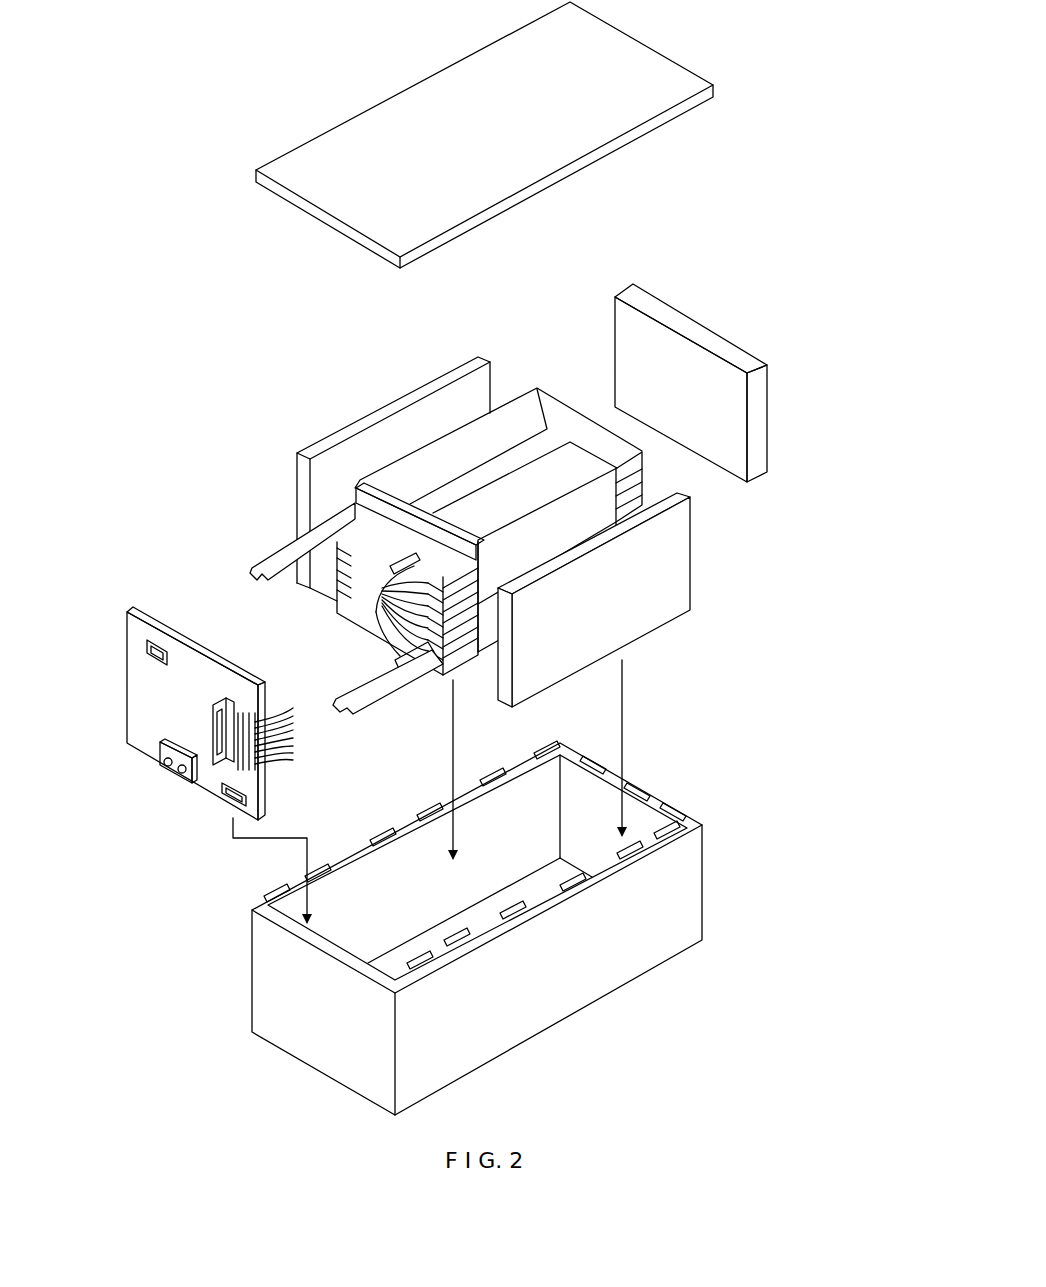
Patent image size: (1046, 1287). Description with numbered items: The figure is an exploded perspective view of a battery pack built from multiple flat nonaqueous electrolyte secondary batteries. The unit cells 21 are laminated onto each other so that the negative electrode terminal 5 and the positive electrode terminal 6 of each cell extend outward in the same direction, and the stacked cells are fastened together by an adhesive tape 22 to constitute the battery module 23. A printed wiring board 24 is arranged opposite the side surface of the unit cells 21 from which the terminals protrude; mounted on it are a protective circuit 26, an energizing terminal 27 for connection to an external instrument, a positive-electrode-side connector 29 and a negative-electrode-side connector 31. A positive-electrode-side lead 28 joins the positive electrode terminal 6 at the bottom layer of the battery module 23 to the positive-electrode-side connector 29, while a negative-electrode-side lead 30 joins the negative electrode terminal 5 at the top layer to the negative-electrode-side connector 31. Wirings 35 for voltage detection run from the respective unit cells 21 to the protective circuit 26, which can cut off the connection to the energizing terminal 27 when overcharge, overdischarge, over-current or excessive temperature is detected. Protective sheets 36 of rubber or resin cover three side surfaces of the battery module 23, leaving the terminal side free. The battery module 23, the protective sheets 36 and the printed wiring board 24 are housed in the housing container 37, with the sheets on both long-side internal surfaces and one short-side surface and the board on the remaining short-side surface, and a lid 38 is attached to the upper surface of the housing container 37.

The lid 38 is at (658, 72).
The housing container 37 is at (690, 893).
The protective sheets 36 is at (360, 428).
The battery module 23 is at (437, 450).
The adhesive tape 22 is at (560, 470).
The unit cells 21 is at (637, 463).
The negative electrode terminal 5 is at (347, 513).
The positive electrode terminal 6 is at (413, 568).
The negative-electrode-side lead 30 is at (258, 560).
The positive-electrode-side lead 28 is at (377, 697).
The wirings for voltage detection 35 is at (370, 610).
The printed wiring board 24 is at (158, 610).
The negative-electrode-side connector 31 is at (165, 648).
The protective circuit 26 is at (225, 705).
The energizing terminal 27 is at (180, 778).
The positive-electrode-side connector 29 is at (243, 798).